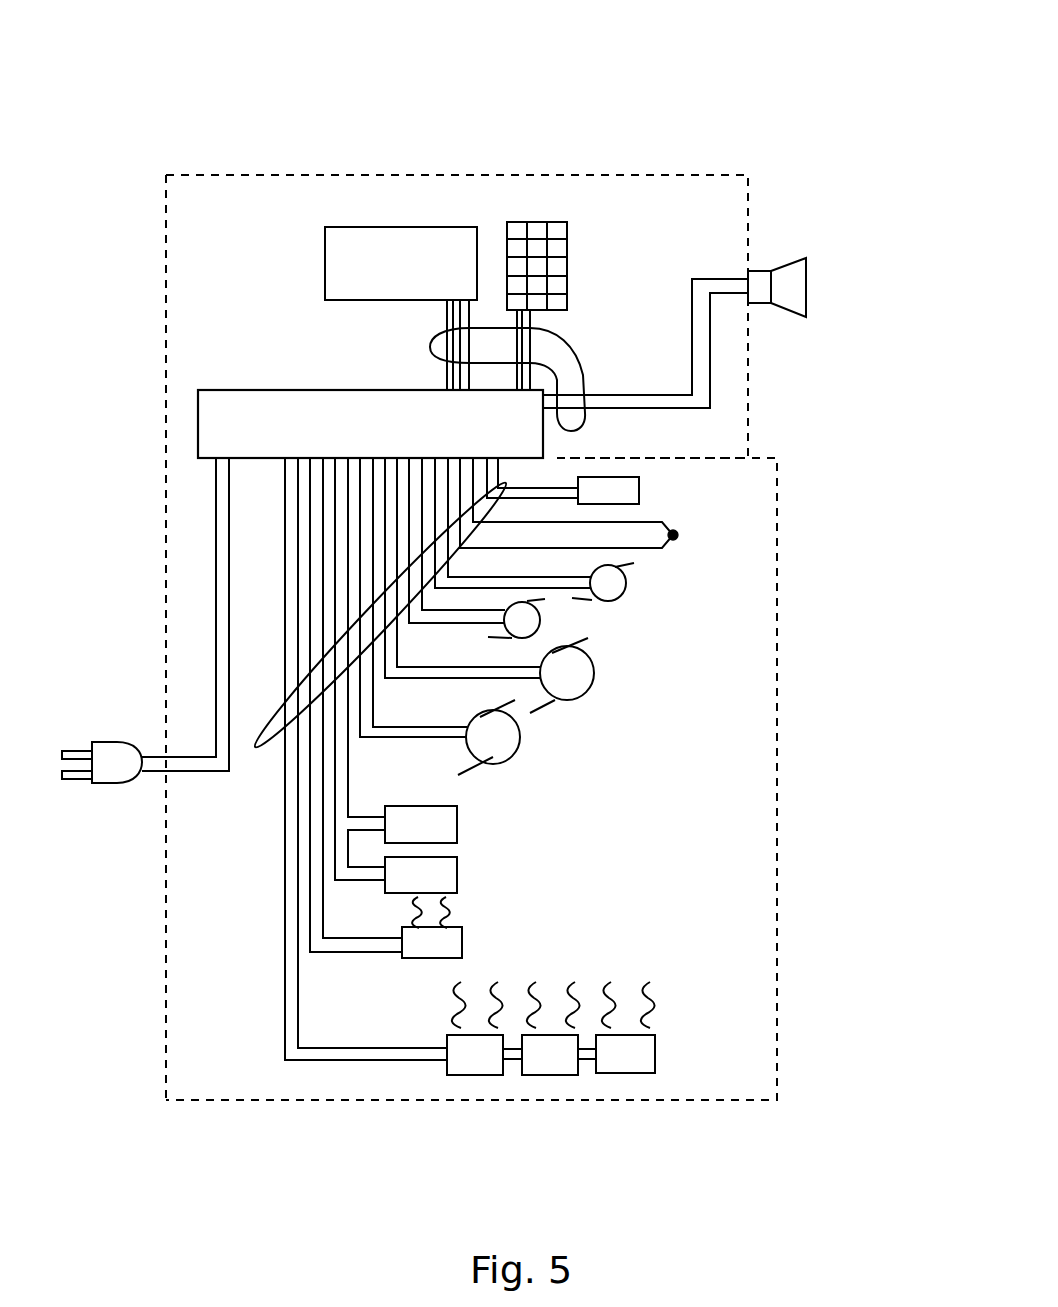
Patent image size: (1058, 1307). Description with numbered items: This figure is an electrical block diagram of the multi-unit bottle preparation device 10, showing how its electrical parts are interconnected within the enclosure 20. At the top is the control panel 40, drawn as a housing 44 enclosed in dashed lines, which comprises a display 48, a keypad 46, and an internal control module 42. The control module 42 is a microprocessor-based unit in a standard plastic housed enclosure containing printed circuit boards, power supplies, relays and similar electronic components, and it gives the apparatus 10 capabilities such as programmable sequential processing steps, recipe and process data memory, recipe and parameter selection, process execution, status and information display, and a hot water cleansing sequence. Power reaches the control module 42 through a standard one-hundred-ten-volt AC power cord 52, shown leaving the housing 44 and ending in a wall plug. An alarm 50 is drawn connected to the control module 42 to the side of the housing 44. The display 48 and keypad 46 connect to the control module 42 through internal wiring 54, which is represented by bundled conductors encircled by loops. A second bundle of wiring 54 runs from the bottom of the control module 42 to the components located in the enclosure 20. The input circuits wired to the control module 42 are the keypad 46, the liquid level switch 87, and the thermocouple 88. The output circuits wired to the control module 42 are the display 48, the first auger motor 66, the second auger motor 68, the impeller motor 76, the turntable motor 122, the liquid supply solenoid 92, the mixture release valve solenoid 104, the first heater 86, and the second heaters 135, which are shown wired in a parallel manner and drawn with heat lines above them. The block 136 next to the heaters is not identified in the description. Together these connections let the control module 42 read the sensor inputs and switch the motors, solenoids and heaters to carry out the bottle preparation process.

The multi-unit bottle preparation device 10 is at (158, 105).
The enclosure 20 is at (693, 458).
The control panel 40 is at (766, 369).
The control module 42 is at (312, 390).
The housing 44 is at (258, 175).
The keypad 46 is at (537, 222).
The display 48 is at (425, 227).
The alarm 50 is at (808, 270).
The power cord 52 is at (118, 742).
The wiring 54 is at (427, 350).
The first auger motor 66 is at (626, 583).
The second auger motor 68 is at (540, 620).
The impeller motor 76 is at (594, 670).
The first heater 86 is at (462, 948).
The liquid level switch 87 is at (640, 492).
The thermocouple 88 is at (678, 534).
The liquid supply solenoid 92 is at (457, 825).
The mixture release valve solenoid 104 is at (457, 870).
The turntable motor 122 is at (520, 735).
The second heater 135 is at (548, 1053).
The heater 136 is at (656, 1053).